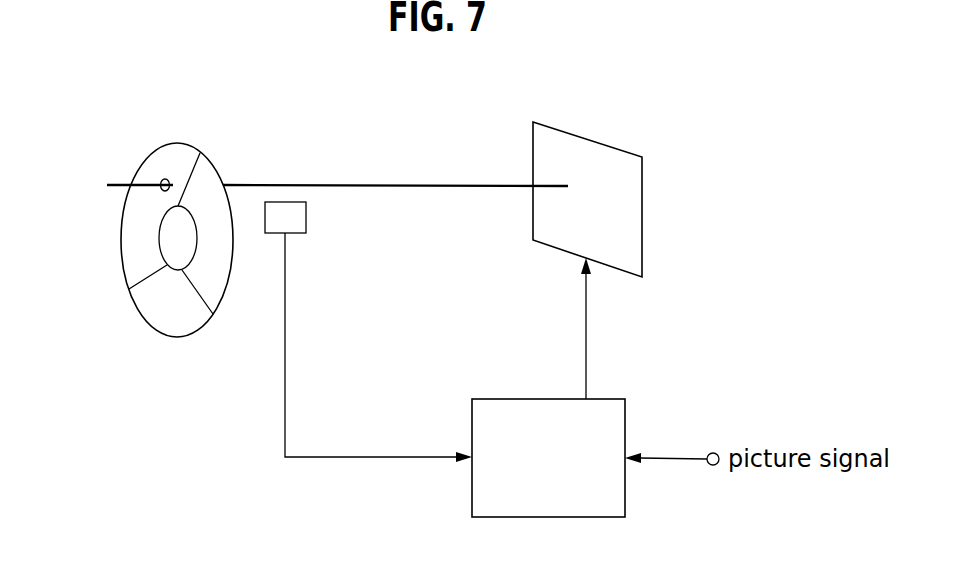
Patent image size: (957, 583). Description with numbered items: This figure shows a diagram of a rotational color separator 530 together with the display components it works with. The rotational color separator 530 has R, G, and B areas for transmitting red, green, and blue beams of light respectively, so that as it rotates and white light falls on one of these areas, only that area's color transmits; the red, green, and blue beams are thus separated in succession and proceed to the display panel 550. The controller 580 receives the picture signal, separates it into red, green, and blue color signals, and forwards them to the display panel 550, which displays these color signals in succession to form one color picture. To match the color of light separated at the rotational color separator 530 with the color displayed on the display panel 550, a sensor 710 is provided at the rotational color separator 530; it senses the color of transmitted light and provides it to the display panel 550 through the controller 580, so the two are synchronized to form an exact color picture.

The rotational color separator 530 is at (105, 258).
The display panel 550 is at (658, 216).
The controller 580 is at (645, 420).
The sensor 710 is at (317, 244).